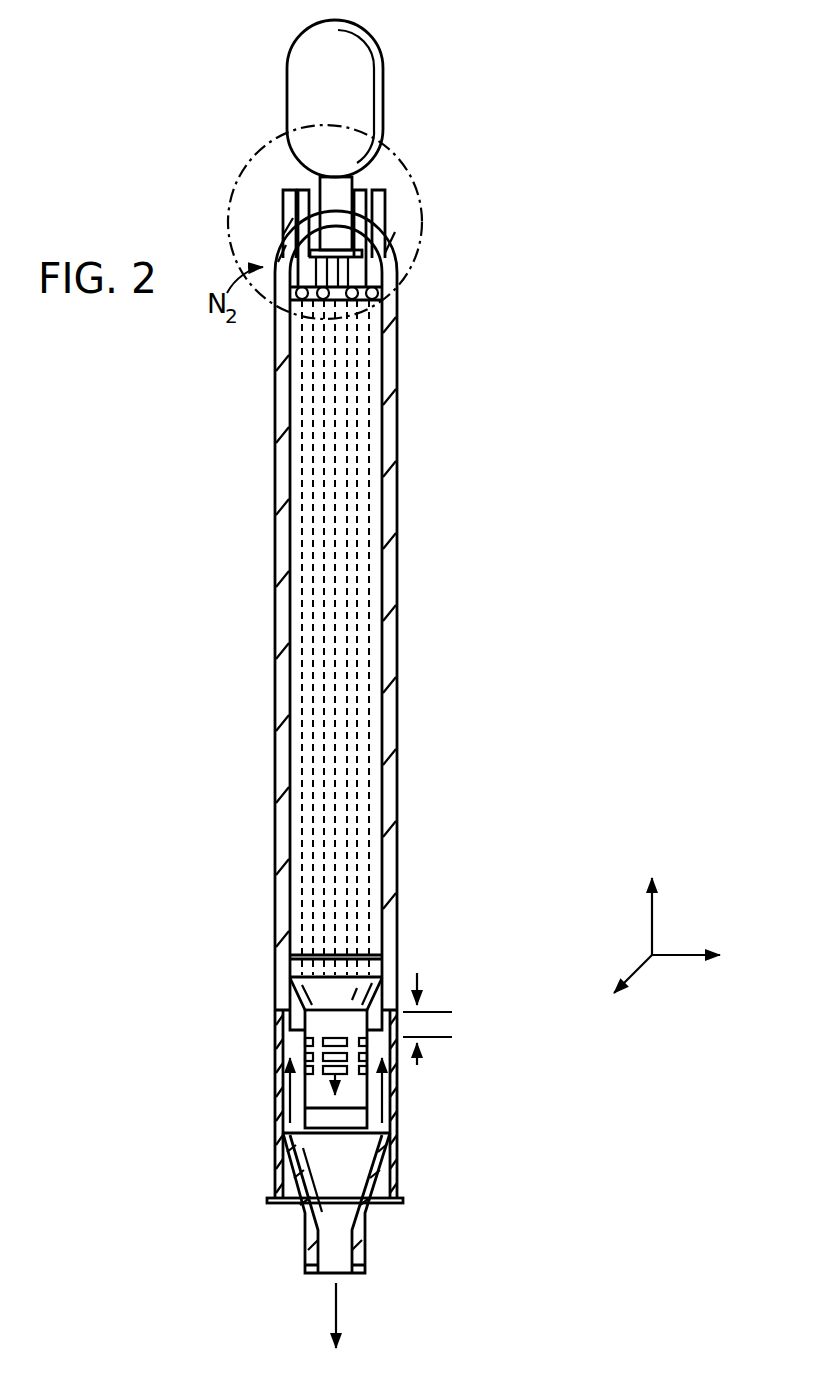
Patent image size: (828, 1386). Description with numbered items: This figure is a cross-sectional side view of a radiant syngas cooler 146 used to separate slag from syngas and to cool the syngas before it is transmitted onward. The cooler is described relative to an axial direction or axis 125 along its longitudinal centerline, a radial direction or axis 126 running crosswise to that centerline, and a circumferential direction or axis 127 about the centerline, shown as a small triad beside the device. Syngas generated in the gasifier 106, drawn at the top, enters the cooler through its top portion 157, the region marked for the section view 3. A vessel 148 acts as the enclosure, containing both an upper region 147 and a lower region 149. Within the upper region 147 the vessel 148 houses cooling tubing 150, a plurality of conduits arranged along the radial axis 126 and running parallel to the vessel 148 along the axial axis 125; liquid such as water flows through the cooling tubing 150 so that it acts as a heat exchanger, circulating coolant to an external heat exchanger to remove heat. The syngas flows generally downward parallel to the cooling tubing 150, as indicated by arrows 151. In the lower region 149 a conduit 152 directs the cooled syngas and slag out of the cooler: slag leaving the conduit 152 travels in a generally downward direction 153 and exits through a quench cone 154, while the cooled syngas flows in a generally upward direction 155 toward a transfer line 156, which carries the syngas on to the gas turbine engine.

The gasifier 106 is at (371, 34).
The gas inlet header 157 is at (262, 222).
The section line 3- 3 is at (387, 137).
The radiant syngas cooler 146 is at (266, 412).
The upper region 147 is at (409, 484).
The vessel 148 is at (390, 408).
The cooling tubing 150 is at (280, 530).
The arrows 151 is at (249, 682).
The lower region 149 is at (277, 1013).
The conduit 152 is at (305, 1045).
The upward direction 155 is at (290, 1112).
The transfer line 156 is at (427, 1010).
The quench cone 154 is at (365, 1213).
The downward direction 153 is at (336, 1313).
The axial direction or axis 125 is at (653, 905).
The radial direction or axis 126 is at (688, 955).
The circumferential direction or axis 127 is at (633, 975).